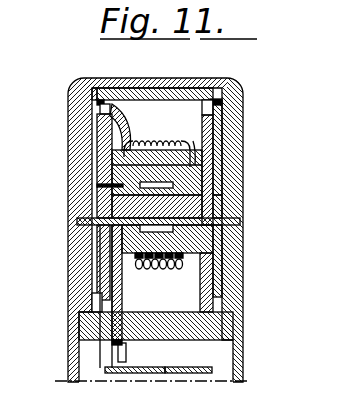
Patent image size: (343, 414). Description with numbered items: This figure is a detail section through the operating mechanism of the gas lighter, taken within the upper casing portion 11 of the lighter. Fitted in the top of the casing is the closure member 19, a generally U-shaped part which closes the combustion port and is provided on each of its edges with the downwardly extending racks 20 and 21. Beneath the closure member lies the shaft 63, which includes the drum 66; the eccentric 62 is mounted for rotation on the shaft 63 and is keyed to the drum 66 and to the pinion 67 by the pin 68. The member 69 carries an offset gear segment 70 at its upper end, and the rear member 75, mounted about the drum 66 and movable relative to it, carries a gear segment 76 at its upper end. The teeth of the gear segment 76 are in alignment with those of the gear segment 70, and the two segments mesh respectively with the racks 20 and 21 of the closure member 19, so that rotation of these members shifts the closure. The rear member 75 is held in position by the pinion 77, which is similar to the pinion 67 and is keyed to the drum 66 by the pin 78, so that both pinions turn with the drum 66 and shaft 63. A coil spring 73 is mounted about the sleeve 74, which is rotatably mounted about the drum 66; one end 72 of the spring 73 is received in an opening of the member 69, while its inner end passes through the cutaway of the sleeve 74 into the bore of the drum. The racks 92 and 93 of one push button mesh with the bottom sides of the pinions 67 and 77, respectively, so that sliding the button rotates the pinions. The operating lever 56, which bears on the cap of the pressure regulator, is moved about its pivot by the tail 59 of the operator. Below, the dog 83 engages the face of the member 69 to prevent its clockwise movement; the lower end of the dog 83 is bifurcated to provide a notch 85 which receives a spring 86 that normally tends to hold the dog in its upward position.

The upper casing portion 11 is at (68, 357).
The closure member 19 is at (165, 93).
The rack 20 is at (97, 80).
The rack 21 is at (233, 97).
The operating lever 56 is at (193, 373).
The tail 59 is at (100, 370).
The eccentric 62 is at (130, 202).
The shaft 63 is at (232, 203).
The drum 66 is at (142, 136).
The pinion 67 is at (140, 185).
The pin 68 is at (97, 225).
The member 69 is at (112, 125).
The offset gear segment 70 is at (100, 110).
The end of coil spring 72 is at (100, 140).
The coil spring 73 is at (170, 270).
The sleeve 74 is at (213, 260).
The rear member 75 is at (213, 128).
The gear segment 76 is at (212, 110).
The pinion 77 is at (237, 170).
The pin 78 is at (237, 221).
The dog 83 is at (128, 362).
The notch 85 is at (135, 387).
The spring 86 is at (127, 352).
The rack 92 is at (100, 270).
The rack 93 is at (213, 277).